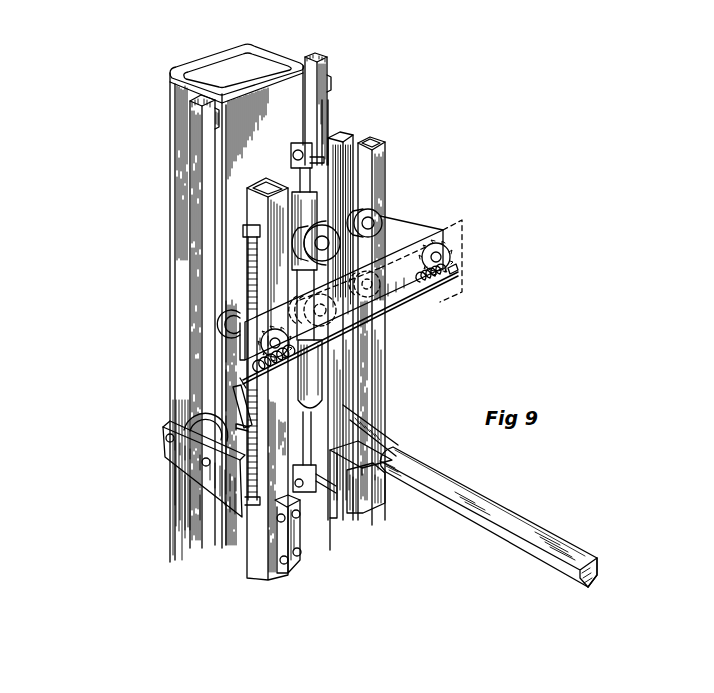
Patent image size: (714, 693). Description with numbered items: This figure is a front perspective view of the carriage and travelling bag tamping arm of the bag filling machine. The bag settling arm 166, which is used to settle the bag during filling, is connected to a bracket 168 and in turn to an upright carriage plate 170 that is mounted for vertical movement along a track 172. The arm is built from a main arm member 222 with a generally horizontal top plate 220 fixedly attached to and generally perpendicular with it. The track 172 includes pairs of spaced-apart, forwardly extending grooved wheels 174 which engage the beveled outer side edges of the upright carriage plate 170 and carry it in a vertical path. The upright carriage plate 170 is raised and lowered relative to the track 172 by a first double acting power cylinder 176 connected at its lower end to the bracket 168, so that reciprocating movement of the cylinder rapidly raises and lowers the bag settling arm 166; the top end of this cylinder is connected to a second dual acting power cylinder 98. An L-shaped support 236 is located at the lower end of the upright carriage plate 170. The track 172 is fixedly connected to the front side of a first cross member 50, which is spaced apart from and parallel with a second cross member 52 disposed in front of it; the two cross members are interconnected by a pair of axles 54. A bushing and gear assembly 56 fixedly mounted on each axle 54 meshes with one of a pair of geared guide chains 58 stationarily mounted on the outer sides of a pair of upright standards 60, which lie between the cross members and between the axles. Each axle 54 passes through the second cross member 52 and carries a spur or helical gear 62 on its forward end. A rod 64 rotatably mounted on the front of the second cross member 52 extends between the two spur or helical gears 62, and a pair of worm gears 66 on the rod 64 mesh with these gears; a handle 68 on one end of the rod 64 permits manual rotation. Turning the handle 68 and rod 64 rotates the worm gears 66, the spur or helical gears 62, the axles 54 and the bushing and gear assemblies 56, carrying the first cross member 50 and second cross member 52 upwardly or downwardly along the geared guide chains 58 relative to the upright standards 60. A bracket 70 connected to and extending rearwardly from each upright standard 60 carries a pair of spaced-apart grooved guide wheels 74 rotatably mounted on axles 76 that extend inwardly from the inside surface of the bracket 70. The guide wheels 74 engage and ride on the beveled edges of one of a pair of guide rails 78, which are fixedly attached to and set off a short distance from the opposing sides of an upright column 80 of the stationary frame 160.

The first cross member 50 is at (206, 308).
The second cross member 52 is at (443, 238).
The axles 54 is at (455, 262).
The bushing and gear assembly 56 is at (226, 324).
The geared guide chains 58 is at (250, 248).
The upright standards 60 is at (265, 181).
The spur or helical gear 62 is at (258, 346).
The rod 64 is at (402, 302).
The worm gears 66 is at (262, 371).
The handle 68 is at (240, 402).
The bracket 70 is at (162, 430).
The grooved guide wheels 74 is at (220, 435).
The axles 76 is at (203, 463).
The guide rails 78 is at (170, 80).
The upright column 80 is at (214, 52).
The second dual acting power cylinder 98 is at (302, 195).
The stationary frame 160 is at (150, 162).
The bag settling arm 166 is at (560, 530).
The bracket 168 is at (388, 438).
The upright carriage plate 170 is at (347, 134).
The track 172 is at (324, 145).
The grooved wheels 174 is at (332, 230).
The first double acting power cylinder 176 is at (316, 398).
The top plate 220 is at (472, 497).
The main arm member 222 is at (598, 580).
The L-shaped support 236 is at (330, 520).